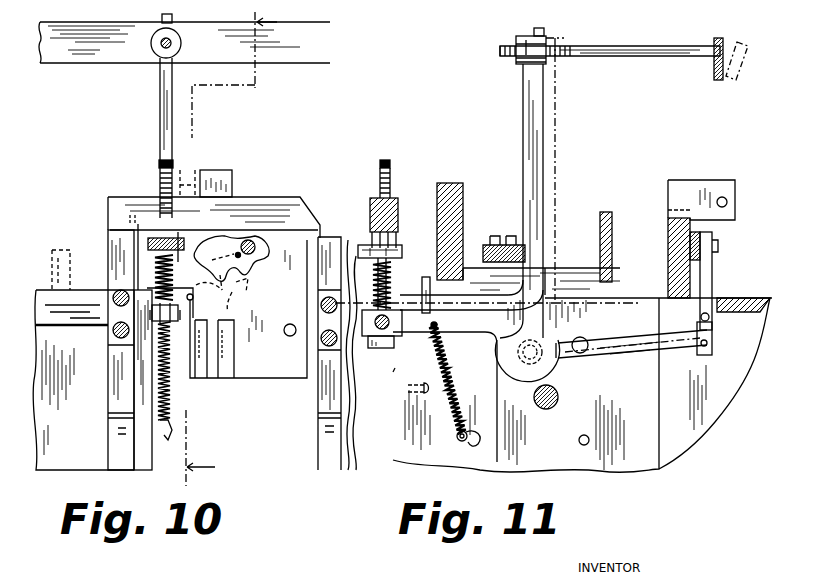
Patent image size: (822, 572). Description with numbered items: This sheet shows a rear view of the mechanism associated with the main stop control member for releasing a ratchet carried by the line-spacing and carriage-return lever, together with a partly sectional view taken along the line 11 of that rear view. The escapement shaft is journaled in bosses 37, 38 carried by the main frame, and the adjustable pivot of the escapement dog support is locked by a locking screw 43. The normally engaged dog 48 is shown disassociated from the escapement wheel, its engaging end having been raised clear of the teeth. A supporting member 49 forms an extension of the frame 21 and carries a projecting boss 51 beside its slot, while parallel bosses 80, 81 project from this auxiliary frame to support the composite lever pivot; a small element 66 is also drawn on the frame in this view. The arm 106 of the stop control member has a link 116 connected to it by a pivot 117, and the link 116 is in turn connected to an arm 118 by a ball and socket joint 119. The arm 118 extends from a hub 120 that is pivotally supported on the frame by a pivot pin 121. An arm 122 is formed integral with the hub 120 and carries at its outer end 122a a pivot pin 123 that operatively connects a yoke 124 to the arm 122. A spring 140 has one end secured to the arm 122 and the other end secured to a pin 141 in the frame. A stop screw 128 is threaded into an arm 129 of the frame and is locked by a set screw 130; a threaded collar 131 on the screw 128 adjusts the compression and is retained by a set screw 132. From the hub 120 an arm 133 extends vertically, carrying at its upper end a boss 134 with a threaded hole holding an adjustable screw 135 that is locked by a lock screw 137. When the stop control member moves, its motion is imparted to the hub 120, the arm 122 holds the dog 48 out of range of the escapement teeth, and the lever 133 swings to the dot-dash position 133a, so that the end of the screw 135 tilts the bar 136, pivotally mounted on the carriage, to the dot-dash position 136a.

In FIG. 10, the section line 11 is at (245, 247).
In FIG. 10, the frame 21 is at (68, 478).
In FIG. 11, the frame 21 is at (745, 380).
In FIG. 11, the boss 37 is at (608, 212).
In FIG. 11, the boss 38 is at (452, 183).
In FIG. 11, the locking screw 43 is at (370, 398).
In FIG. 10, the normally engaged dog 48 is at (212, 304).
In FIG. 11, the normally engaged dog 48 is at (426, 277).
In FIG. 10, the supporting member 49 is at (278, 368).
In FIG. 11, the supporting member 49 is at (668, 238).
In FIG. 11, the projecting boss 51 is at (735, 188).
In FIG. 11, the pin 66 is at (568, 441).
In FIG. 10, the boss 80 is at (190, 350).
In FIG. 10, the boss 81 is at (234, 360).
In FIG. 11, the arm 106 is at (700, 238).
In FIG. 11, the link 116 is at (712, 276).
In FIG. 11, the pivot 117 is at (718, 246).
In FIG. 11, the arm 118 is at (620, 345).
In FIG. 11, the ball and socket joint 119 is at (710, 317).
In FIG. 11, the hub 120 is at (552, 344).
In FIG. 10, the pivot pin 121 is at (136, 352).
In FIG. 11, the pivot pin 121 is at (534, 392).
In FIG. 11, the arm 122 is at (458, 326).
In FIG. 11, the outer end of arm 122a is at (381, 379).
In FIG. 10, the pivot pin 123 is at (108, 326).
In FIG. 11, the pivot pin 123 is at (394, 348).
In FIG. 10, the yoke 124 is at (150, 310).
In FIG. 11, the yoke 124 is at (398, 302).
In FIG. 10, the stop screw 128 is at (159, 164).
In FIG. 11, the stop screw 128 is at (382, 160).
In FIG. 10, the arm of the frame 129 is at (250, 200).
In FIG. 11, the arm of the frame 129 is at (398, 210).
In FIG. 10, the set screw 130 is at (158, 212).
In FIG. 11, the set screw 130 is at (370, 198).
In FIG. 10, the threaded collar 131 is at (138, 245).
In FIG. 11, the threaded collar 131 is at (362, 258).
In FIG. 10, the set screw 132 is at (148, 244).
In FIG. 11, the set screw 132 is at (370, 220).
In FIG. 10, the arm 133 is at (160, 104).
In FIG. 11, the arm 133 is at (523, 120).
In FIG. 11, the displaced position of arm 133a is at (558, 107).
In FIG. 10, the boss 134 is at (160, 58).
In FIG. 11, the boss 134 is at (516, 66).
In FIG. 11, the adjustable screw 135 is at (636, 66).
In FIG. 10, the bar 136 is at (264, 76).
In FIG. 11, the bar 136 is at (722, 38).
In FIG. 11, the tilted position of bar 136a is at (735, 78).
In FIG. 10, the lock screw 137 is at (172, 18).
In FIG. 11, the lock screw 137 is at (534, 32).
In FIG. 10, the spring 140 is at (176, 398).
In FIG. 11, the spring 140 is at (434, 382).
In FIG. 10, the pin 141 is at (175, 444).
In FIG. 11, the pin 141 is at (458, 446).